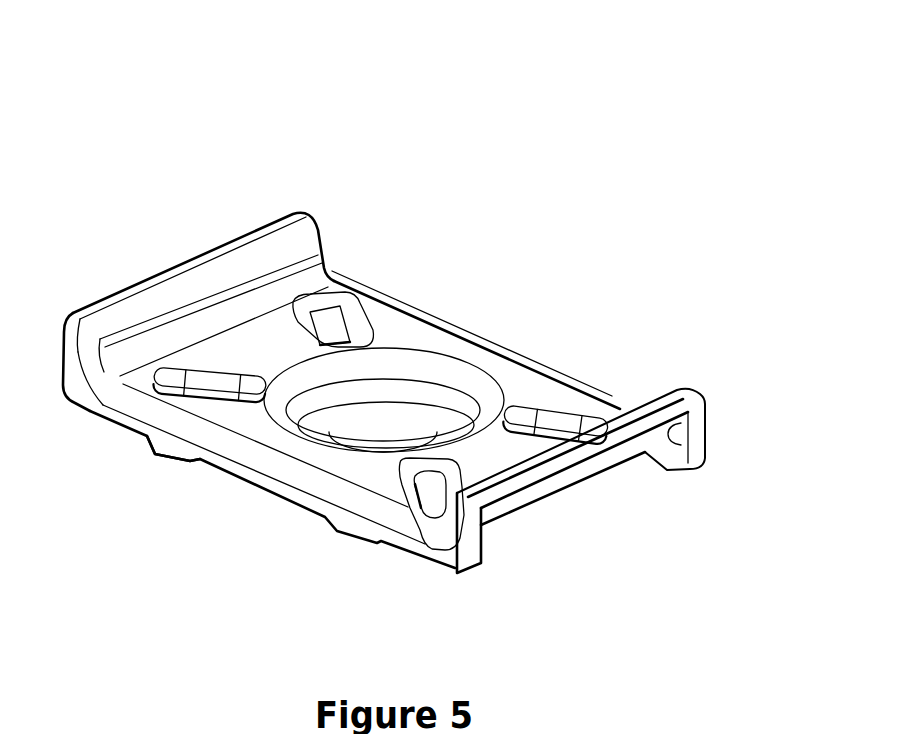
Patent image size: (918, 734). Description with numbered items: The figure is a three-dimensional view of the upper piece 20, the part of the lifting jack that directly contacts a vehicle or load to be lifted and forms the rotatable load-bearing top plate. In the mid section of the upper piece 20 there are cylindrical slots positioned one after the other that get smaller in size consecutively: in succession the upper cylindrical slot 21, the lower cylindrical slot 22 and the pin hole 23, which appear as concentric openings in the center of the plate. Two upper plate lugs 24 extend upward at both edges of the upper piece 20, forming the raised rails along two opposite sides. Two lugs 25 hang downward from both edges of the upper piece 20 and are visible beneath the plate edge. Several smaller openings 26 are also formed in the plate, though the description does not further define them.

The upper piece 20 is at (200, 233).
The upper cylindrical slot 21 is at (368, 363).
The lower cylindrical slot 22 is at (383, 390).
The pin hole 23 is at (367, 446).
The upper plate lugs 24 is at (170, 303).
The lugs 25 is at (173, 455).
The slot opening 26 is at (558, 437).